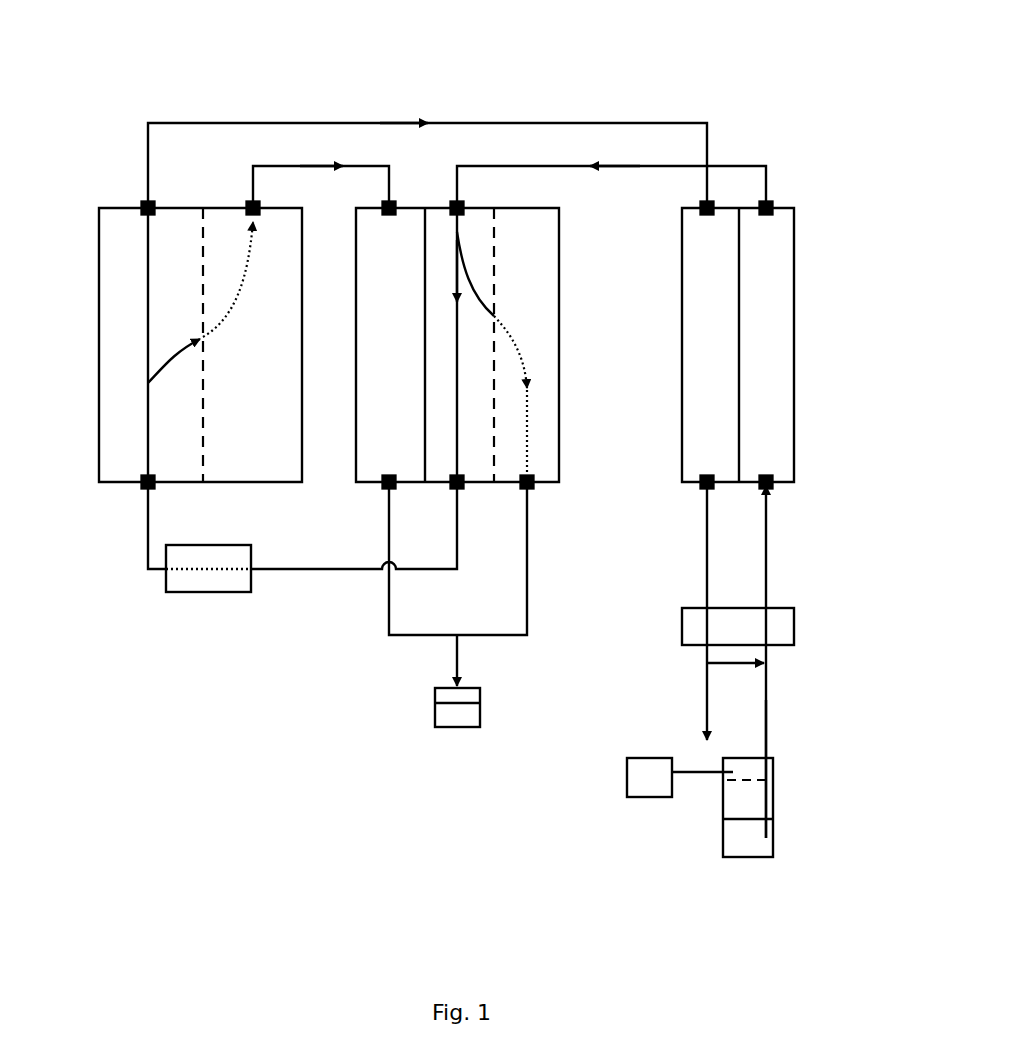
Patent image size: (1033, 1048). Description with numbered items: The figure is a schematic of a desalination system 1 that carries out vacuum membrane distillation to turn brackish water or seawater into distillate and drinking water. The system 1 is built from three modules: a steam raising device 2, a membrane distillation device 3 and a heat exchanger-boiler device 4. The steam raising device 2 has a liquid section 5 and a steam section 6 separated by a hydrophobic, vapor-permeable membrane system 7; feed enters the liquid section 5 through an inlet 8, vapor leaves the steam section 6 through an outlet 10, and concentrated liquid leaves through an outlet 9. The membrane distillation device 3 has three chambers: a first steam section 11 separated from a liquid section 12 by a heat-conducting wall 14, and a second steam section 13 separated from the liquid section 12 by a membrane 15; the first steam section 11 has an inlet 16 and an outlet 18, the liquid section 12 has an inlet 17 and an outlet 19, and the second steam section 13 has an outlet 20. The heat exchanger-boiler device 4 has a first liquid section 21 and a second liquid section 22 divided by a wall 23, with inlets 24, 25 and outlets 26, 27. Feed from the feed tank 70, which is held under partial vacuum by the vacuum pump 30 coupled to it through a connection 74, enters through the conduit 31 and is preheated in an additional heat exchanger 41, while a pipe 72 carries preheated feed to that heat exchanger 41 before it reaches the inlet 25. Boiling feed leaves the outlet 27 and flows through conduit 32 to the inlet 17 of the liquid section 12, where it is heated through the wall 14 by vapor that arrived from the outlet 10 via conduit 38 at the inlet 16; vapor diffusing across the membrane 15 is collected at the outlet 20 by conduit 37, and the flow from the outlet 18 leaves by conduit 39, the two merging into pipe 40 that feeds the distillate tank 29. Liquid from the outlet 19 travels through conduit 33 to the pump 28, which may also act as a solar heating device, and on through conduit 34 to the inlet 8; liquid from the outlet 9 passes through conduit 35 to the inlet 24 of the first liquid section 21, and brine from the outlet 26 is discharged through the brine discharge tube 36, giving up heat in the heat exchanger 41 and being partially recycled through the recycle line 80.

The desalination system 1 is at (614, 76).
The steam raising device 2 is at (92, 158).
The membrane distillation device 3 is at (578, 256).
The heat exchanger-boiler device 4 is at (808, 260).
The liquid section 5 is at (99, 359).
The steam section 6 is at (302, 283).
The membrane system 7 is at (205, 391).
The inlet 8 is at (146, 489).
The outlet 9 is at (152, 200).
The outlet 10 is at (256, 200).
The first steam section 11 is at (356, 381).
The liquid section 12 is at (441, 345).
The second steam section 13 is at (559, 366).
The wall 14 is at (425, 283).
The membrane 15 is at (494, 272).
The inlet 16 is at (392, 200).
The inlet 17 is at (460, 200).
The outlet 18 is at (386, 490).
The outlet 19 is at (454, 490).
The outlet 20 is at (530, 490).
The first liquid section 21 is at (710, 345).
The second liquid section 22 is at (766, 345).
The wall 23 is at (739, 282).
The inlet 24 is at (710, 200).
The inlet 25 is at (763, 490).
The outlet 26 is at (704, 490).
The outlet 27 is at (769, 200).
The pump 28 is at (186, 590).
The distillate tank 29 is at (435, 707).
The vacuum pump 30 is at (627, 785).
The conduit 31 is at (766, 547).
The conduit 32 is at (636, 156).
The conduit 33 is at (300, 569).
The conduit 34 is at (150, 498).
The conduit 35 is at (318, 114).
The brine discharge tube 36 is at (707, 557).
The conduit 37 is at (527, 540).
The conduit 38 is at (316, 157).
The conduit 39 is at (392, 534).
The pipe 40 is at (457, 652).
The additional heat exchanger 41 is at (794, 611).
The feed intake reservoir 70 is at (723, 843).
The conduit 72 is at (766, 705).
The connection 74 is at (700, 775).
The recycle line 80 is at (747, 665).